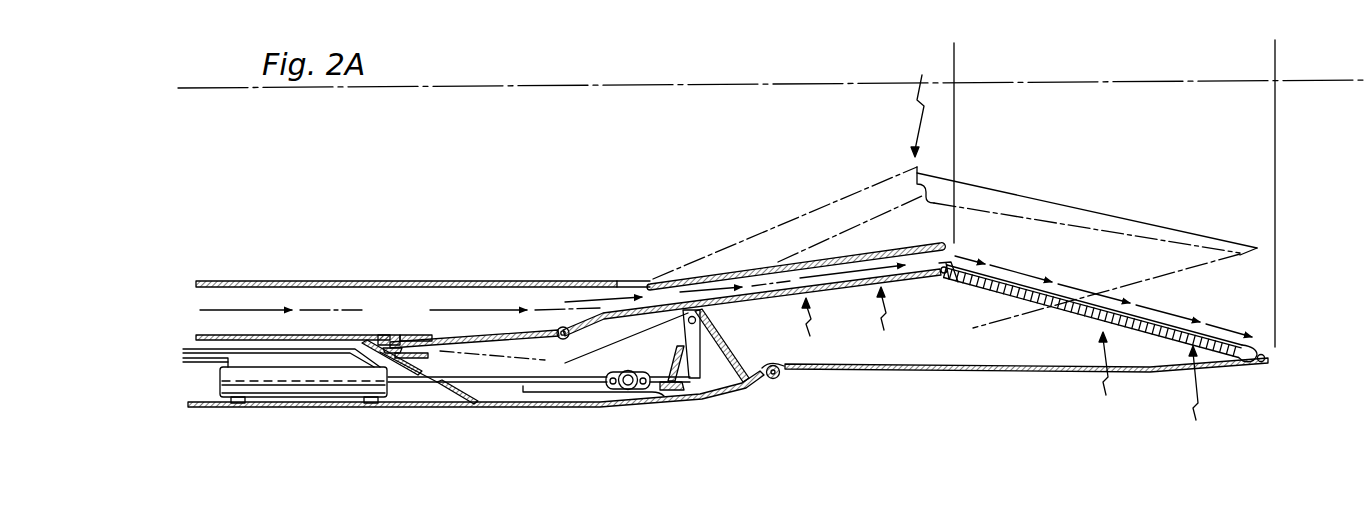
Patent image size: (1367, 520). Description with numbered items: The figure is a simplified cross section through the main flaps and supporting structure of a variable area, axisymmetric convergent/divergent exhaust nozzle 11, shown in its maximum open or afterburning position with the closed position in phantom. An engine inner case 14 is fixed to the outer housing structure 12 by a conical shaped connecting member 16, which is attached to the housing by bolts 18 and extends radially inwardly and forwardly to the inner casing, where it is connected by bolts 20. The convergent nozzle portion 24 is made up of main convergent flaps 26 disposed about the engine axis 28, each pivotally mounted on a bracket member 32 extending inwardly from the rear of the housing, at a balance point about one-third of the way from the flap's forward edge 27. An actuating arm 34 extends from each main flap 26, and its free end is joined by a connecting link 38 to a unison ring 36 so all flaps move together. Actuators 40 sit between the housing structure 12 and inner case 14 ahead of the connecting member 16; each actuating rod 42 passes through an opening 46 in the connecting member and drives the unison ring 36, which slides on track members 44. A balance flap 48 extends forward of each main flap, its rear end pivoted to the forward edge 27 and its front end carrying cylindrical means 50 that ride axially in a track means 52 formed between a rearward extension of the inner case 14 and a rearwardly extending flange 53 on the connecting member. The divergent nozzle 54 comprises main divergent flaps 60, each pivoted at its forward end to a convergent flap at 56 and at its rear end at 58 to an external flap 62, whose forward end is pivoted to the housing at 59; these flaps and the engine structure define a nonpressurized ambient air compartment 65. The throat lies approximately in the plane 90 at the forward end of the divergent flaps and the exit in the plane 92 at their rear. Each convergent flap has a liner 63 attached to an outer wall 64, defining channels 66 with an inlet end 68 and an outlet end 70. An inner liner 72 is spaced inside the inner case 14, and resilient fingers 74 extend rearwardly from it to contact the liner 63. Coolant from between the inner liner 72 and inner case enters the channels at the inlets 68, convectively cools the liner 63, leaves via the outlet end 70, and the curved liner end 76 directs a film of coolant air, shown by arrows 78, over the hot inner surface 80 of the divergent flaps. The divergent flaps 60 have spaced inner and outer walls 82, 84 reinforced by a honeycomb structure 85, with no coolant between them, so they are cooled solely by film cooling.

The convergent/divergent exhaust nozzle 11 is at (934, 100).
The outer housing structure 12 is at (545, 402).
The engine inner case 14 is at (238, 338).
The conical shaped connecting member 16 is at (402, 350).
The bolts 18 is at (471, 405).
The bolts 20 is at (368, 338).
The convergent nozzle portion 24 is at (894, 323).
The main convergent flap 26 is at (816, 333).
The forward edge of main flap 27 is at (558, 330).
The engine axis 28 is at (740, 82).
The bracket member 32 is at (716, 359).
The actuating arm 34 is at (696, 336).
The unison ring 36 is at (627, 392).
The connecting link 38 is at (681, 392).
The actuator 40 is at (280, 388).
The actuating rod 42 is at (500, 385).
The track member 44 is at (590, 394).
The opening 46 is at (430, 356).
The balance flap 48 is at (485, 343).
The cylindrical means 50 is at (406, 346).
The track means 52 is at (398, 333).
The rearwardly extending flange 53 is at (426, 357).
The divergent nozzle 54 is at (1090, 384).
The pivotal connection between convergent and divergent flaps 56 is at (943, 280).
The pivotal connection between divergent and external flaps 58 is at (1268, 360).
The pivotal mounting of external flap 59 is at (782, 380).
The main divergent flap 60 is at (1206, 394).
The external flap 62 is at (1058, 370).
The liner 63 is at (806, 268).
The outer wall 64 is at (849, 290).
The ambient air compartment 65 is at (1012, 372).
The axially extending channel 66 is at (919, 262).
The inlet end 68 is at (651, 286).
The outlet end 70 is at (962, 270).
The inner liner 72 is at (478, 280).
The resilient fingers 74 is at (632, 280).
The curved liner end 76 is at (958, 266).
The coolant air film 78 is at (1170, 320).
The hot inner surface 80 is at (1246, 362).
The inner wall 82 is at (1212, 328).
The outer wall 84 is at (1158, 336).
The honeycomb structure 85 is at (1080, 306).
The throat plane 90 is at (956, 126).
The exit plane 92 is at (1276, 171).